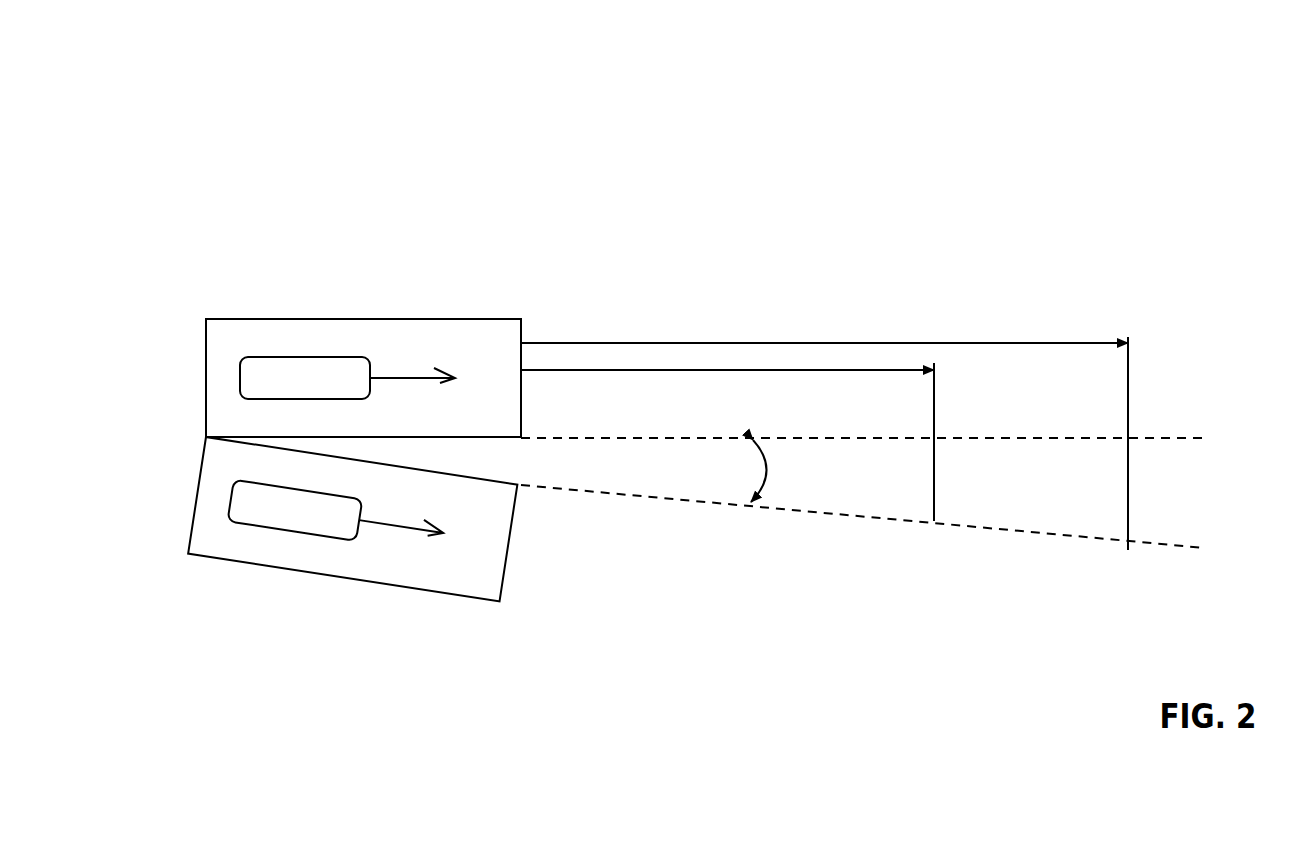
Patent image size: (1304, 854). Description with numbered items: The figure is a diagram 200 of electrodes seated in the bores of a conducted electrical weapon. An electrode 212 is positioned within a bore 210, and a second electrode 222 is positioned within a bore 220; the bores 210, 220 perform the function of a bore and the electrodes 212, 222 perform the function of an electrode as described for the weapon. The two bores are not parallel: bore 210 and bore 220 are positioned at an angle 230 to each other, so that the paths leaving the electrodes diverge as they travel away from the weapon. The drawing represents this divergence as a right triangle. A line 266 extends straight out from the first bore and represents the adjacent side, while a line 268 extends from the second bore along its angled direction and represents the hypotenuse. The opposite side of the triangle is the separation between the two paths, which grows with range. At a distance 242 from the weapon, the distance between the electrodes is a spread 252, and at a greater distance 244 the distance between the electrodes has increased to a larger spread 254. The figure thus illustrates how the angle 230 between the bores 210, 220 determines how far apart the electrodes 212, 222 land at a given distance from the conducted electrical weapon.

The lighting system arrangement 200 is at (282, 105).
The bore 210 is at (278, 319).
The electrode 212 is at (353, 358).
The bore 220 is at (263, 570).
The electrode 222 is at (312, 537).
The angle 230 is at (768, 471).
The distance 242 is at (668, 370).
The distance 244 is at (988, 342).
The spread 252 is at (936, 503).
The spread 254 is at (1130, 503).
The line 266 is at (1212, 440).
The line 268 is at (1213, 547).